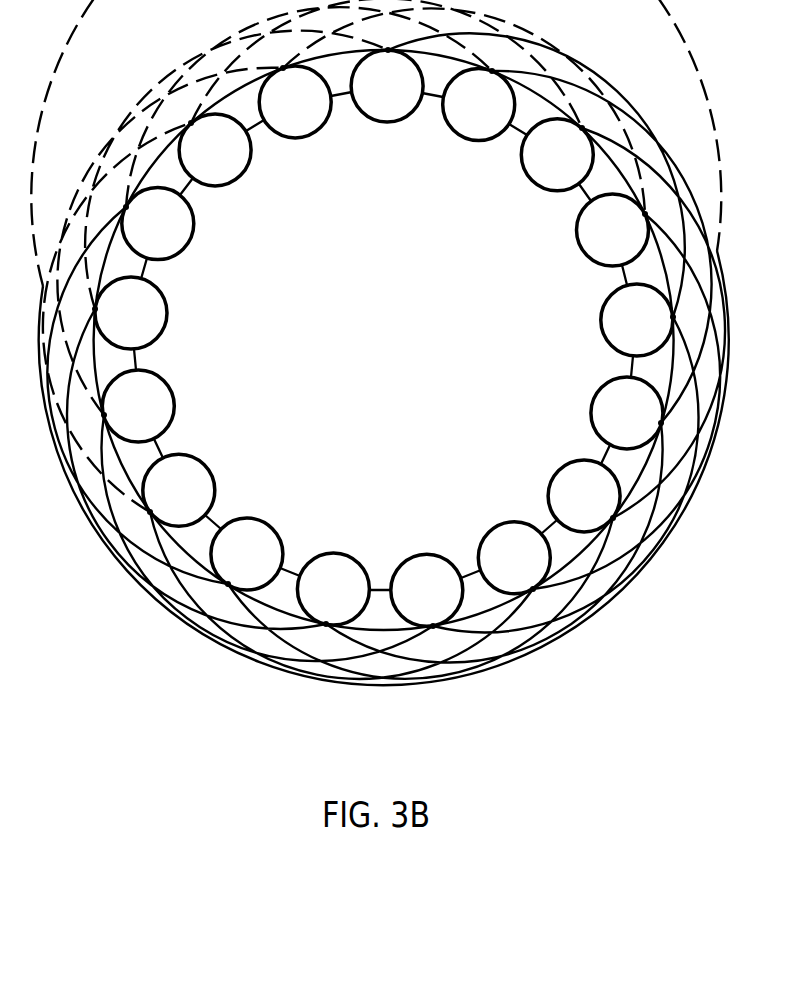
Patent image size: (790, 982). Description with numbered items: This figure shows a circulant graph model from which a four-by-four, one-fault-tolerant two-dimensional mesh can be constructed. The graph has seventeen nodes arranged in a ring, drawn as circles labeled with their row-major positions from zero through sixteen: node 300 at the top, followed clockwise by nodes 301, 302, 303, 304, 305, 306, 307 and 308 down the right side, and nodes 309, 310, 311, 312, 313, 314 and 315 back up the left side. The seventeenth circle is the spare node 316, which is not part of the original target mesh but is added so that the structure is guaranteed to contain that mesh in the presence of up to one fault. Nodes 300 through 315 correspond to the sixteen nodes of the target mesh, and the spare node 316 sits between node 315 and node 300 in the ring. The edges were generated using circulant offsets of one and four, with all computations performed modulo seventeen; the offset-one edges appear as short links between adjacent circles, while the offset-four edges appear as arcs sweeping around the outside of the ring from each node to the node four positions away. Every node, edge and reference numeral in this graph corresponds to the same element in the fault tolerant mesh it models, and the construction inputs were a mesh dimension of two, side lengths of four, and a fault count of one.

The node 300 is at (381, 122).
The node 301 is at (473, 140).
The node 302 is at (546, 189).
The node 303 is at (587, 256).
The node 304 is at (604, 334).
The node 305 is at (591, 413).
The node 306 is at (552, 486).
The node 307 is at (488, 543).
The node 308 is at (417, 556).
The node 309 is at (341, 553).
The node 310 is at (254, 519).
The node 311 is at (205, 466).
The node 312 is at (171, 390).
The node 313 is at (166, 308).
The node 314 is at (193, 230).
The node 315 is at (245, 169).
The spare node 316 is at (314, 131).